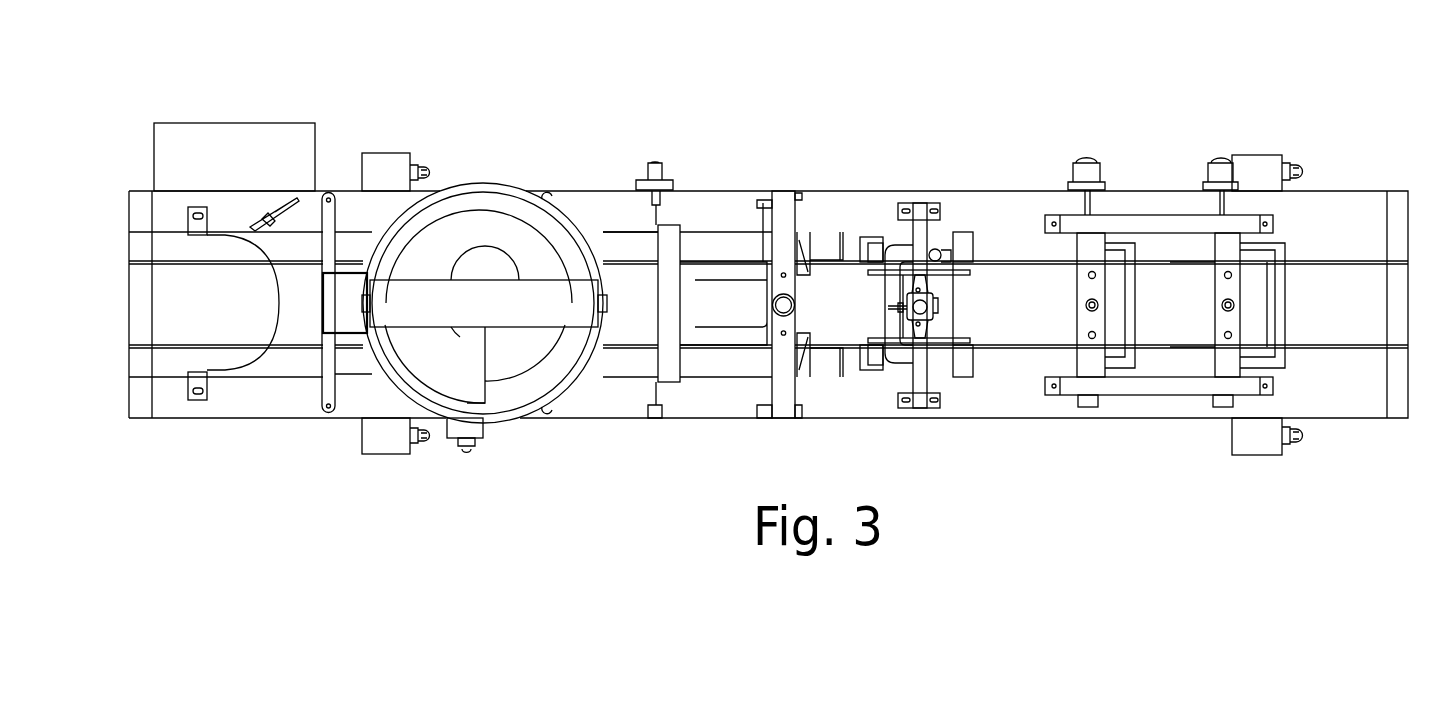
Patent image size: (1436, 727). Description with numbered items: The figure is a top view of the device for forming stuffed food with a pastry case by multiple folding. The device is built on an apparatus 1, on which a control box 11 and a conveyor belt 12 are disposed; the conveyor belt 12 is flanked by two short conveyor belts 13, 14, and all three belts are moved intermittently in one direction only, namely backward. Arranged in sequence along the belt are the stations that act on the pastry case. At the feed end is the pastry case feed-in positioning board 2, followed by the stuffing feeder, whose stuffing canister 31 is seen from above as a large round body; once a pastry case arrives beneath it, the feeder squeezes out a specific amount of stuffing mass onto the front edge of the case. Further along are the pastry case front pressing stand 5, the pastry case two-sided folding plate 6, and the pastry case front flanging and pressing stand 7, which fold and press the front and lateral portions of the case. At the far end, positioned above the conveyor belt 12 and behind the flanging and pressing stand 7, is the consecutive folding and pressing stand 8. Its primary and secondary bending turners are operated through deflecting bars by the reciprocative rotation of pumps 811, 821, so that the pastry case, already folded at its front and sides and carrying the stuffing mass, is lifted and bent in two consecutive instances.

The apparatus 1 is at (981, 200).
The control box 11 is at (222, 140).
The pastry case feed-in positioning board 2 is at (250, 365).
The stuffing canister 31 is at (501, 222).
The conveyor belt 12 is at (618, 288).
The short conveyor belt 13 is at (630, 245).
The short conveyor belt 14 is at (612, 373).
The pastry case front pressing stand 5 is at (793, 222).
The pastry case two-sided folding plate 6 is at (879, 245).
The pastry case front flanging and pressing stand 7 is at (918, 212).
The consecutive folding and pressing stand 8 is at (1130, 220).
The pump 811 is at (1084, 170).
The pump 821 is at (1219, 170).